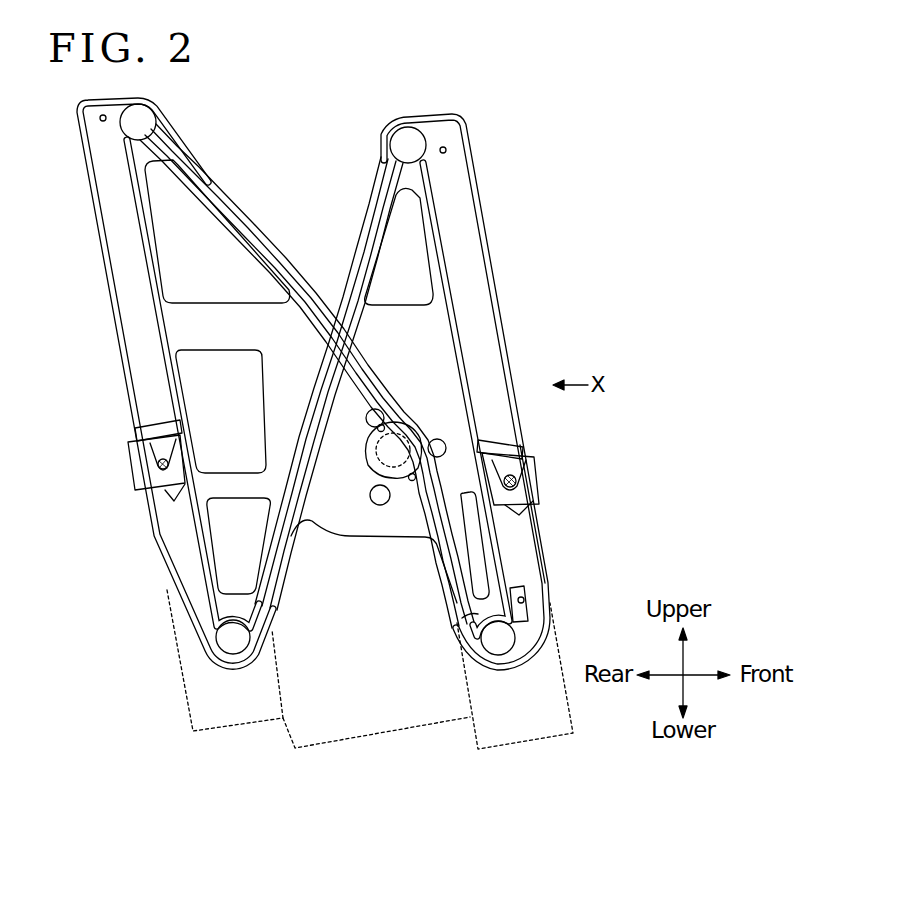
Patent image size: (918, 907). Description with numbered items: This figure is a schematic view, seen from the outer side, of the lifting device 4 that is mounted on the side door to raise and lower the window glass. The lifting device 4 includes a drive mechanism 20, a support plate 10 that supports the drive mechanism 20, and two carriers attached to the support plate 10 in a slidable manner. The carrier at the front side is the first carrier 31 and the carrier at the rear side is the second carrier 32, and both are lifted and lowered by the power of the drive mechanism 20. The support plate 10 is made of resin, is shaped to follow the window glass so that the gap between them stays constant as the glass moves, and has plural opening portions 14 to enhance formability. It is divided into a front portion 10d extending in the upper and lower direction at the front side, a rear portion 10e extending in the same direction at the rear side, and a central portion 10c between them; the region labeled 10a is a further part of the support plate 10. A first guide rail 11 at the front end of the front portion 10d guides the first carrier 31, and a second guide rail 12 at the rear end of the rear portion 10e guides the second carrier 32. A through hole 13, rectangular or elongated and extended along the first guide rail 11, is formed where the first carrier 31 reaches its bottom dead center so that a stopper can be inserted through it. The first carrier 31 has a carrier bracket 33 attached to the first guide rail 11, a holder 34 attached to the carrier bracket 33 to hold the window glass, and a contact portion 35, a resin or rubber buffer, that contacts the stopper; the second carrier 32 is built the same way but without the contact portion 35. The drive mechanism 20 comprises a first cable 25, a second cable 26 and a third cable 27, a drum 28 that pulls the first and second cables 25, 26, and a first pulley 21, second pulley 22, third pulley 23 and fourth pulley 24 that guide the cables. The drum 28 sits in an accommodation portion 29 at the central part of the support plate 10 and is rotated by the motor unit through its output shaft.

The lifting device 4 is at (531, 204).
The support plate 10 is at (445, 330).
The front arm portion of base plate 10a is at (452, 368).
The central portion 10c is at (388, 731).
The front portion 10d is at (532, 740).
The rear portion 10e is at (233, 724).
The first guide rail 11 is at (541, 551).
The second guide rail 12 is at (158, 558).
The through hole 13 is at (528, 601).
The opening portions 14 is at (195, 184).
The drive mechanism 20 is at (398, 506).
The first pulley 21 is at (497, 650).
The second pulley 22 is at (410, 134).
The third pulley 23 is at (236, 650).
The fourth pulley 24 is at (152, 118).
The first cable 25 is at (460, 618).
The second cable 26 is at (368, 364).
The third cable 27 is at (325, 377).
The drum 28 is at (372, 478).
The accommodation portion 29 is at (418, 427).
The first carrier 31 is at (540, 486).
The second carrier 32 is at (128, 462).
The carrier bracket 33 is at (536, 466).
The holder 34 is at (521, 446).
The contact portion 35 is at (530, 518).